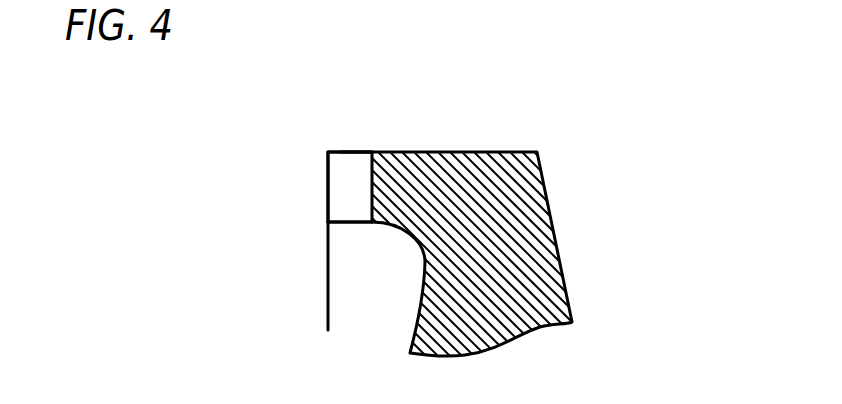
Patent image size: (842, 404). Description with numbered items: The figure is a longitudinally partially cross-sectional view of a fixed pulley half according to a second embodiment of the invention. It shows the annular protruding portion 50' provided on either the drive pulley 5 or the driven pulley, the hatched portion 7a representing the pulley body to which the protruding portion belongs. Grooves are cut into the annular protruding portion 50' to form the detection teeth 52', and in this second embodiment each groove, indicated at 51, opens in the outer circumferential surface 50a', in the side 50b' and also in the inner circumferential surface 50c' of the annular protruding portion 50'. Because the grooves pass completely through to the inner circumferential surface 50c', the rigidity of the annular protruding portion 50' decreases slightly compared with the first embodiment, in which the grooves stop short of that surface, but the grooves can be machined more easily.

The drive pulley 5 is at (163, 213).
The annular protruding portion 50' is at (279, 221).
The outer circumferential surface 50a' is at (388, 79).
The side 50b' is at (285, 142).
The inner circumferential surface 50c' is at (357, 275).
The cutting edge 51 is at (347, 152).
The detection teeth 52' is at (276, 217).
The workpiece (inner surface 5a) 7a is at (568, 275).